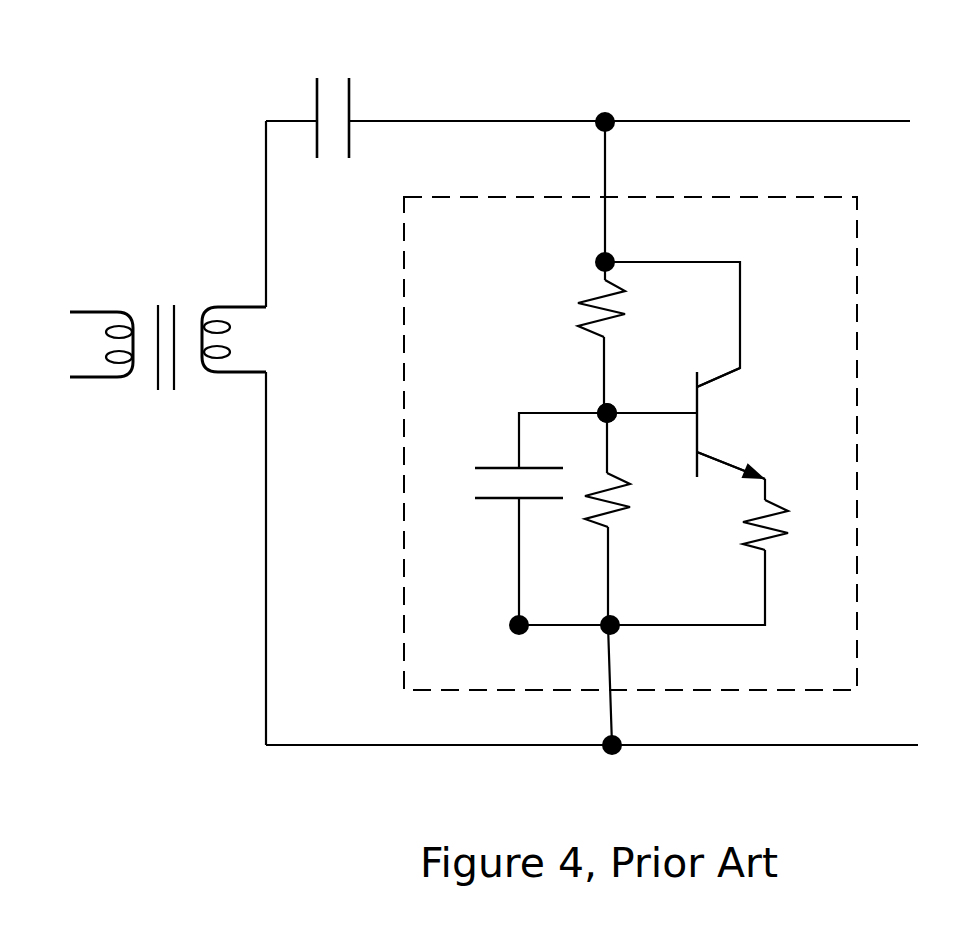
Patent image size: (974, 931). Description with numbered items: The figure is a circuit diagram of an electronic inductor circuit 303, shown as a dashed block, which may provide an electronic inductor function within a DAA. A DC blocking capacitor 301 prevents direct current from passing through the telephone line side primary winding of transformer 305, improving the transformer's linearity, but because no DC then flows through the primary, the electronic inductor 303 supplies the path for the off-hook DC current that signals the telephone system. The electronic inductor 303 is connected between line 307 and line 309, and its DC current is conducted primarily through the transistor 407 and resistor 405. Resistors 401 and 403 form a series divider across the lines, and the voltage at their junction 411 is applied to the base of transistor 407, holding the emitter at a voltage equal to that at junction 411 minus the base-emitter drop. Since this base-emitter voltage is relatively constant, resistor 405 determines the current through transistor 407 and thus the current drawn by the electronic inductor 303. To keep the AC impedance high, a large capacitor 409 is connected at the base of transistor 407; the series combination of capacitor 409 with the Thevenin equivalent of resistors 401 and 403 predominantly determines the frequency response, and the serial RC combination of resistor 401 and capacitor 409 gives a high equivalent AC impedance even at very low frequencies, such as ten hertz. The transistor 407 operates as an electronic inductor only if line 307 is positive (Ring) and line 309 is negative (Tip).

The DC blocking capacitor 301 is at (349, 101).
The electronic inductor circuit 303 is at (870, 207).
The transformer 305 is at (165, 400).
The line 307 is at (848, 117).
The line 309 is at (898, 728).
The resistor 401 is at (557, 318).
The resistor 403 is at (627, 523).
The resistor 405 is at (730, 547).
The transistor 407 is at (710, 412).
The capacitor 409 is at (475, 452).
The junction 411 is at (620, 391).